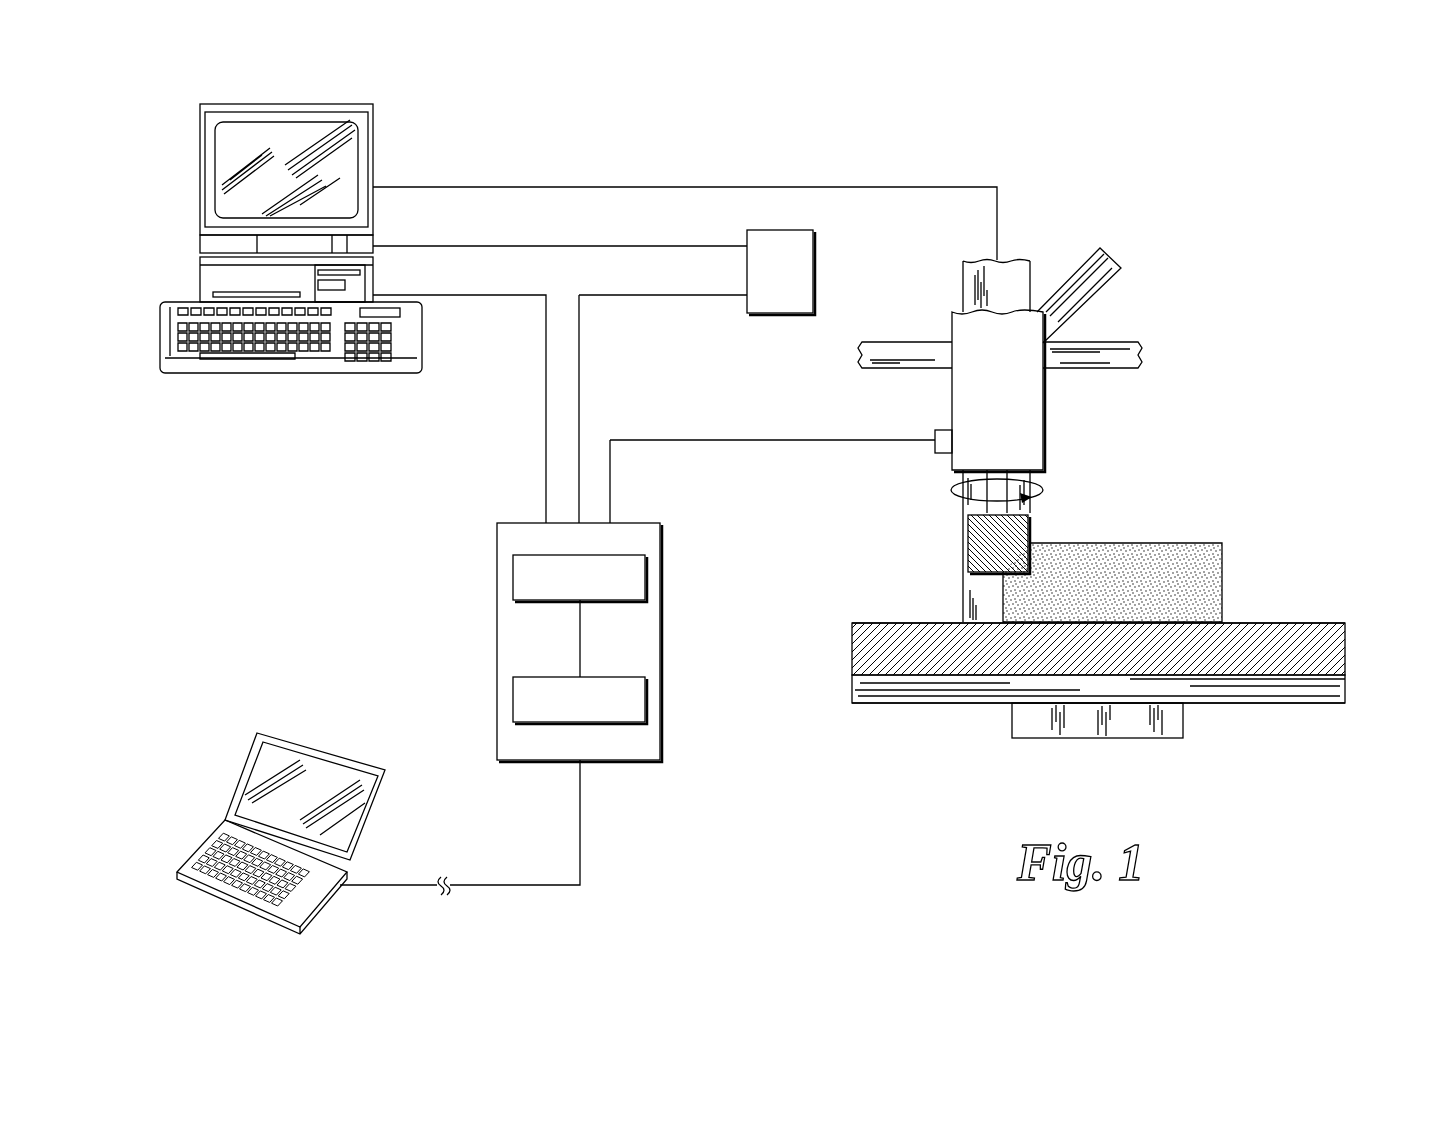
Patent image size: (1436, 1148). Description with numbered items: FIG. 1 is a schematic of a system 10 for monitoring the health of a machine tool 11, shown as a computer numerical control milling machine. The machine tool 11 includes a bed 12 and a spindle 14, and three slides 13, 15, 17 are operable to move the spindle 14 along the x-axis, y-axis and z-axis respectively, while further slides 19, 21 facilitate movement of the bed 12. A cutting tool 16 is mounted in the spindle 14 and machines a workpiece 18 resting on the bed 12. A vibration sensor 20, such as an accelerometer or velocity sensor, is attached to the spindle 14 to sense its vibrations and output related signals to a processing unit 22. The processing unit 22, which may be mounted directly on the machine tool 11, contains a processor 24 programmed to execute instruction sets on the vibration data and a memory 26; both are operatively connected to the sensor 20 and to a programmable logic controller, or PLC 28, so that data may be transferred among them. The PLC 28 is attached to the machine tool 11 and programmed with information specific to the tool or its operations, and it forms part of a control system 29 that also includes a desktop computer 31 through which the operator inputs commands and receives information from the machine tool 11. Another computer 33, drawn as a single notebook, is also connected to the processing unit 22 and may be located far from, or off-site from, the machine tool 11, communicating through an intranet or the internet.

The system 10 is at (1312, 387).
The machine tool 11 is at (1320, 622).
The bed 12 is at (1347, 650).
The slide 13 is at (1095, 372).
The spindle 14 is at (1035, 438).
The slide 15 is at (962, 286).
The cutting tool 16 is at (967, 545).
The slide 17 is at (1100, 292).
The workpiece 18 is at (1223, 558).
The slide 19 is at (1312, 705).
The vibration sensor 20 is at (942, 455).
The slide 21 is at (1160, 738).
The processing unit 22 is at (552, 595).
The processor 24 is at (645, 577).
The memory 26 is at (645, 697).
The programmable logic controller (PLC) 28 is at (768, 315).
The control system 29 is at (703, 152).
The computer 31 is at (200, 283).
The computer 33 is at (205, 843).